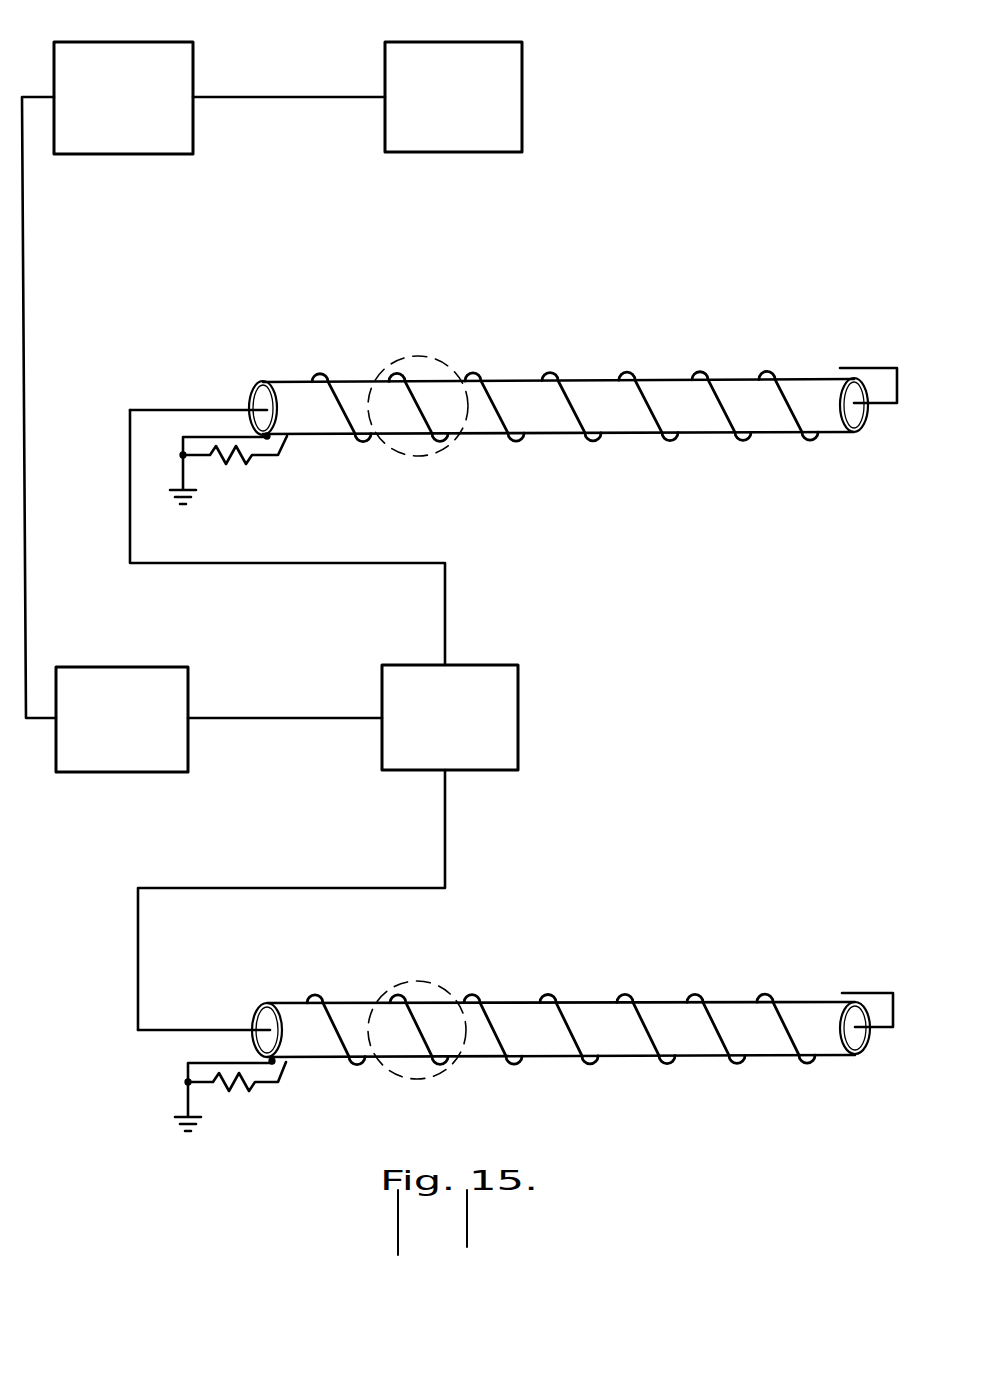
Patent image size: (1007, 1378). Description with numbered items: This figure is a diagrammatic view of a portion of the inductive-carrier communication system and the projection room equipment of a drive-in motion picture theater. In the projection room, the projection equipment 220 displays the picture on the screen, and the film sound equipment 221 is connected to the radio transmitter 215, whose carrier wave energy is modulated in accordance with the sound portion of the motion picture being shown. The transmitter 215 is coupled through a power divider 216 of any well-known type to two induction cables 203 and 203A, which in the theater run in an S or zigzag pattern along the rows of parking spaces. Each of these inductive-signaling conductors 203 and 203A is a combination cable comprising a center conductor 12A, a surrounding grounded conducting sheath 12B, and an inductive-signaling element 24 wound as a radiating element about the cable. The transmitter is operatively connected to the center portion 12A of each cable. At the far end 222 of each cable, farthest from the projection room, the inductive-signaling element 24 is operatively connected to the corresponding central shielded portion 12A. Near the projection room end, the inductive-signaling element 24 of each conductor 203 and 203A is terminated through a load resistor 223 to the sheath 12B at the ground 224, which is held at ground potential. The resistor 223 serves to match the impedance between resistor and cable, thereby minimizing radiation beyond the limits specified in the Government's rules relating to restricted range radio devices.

The center conductor 12A is at (250, 408).
The coaxial cable / tubular outer conductor 12B is at (262, 382).
The inductive-signaling element 24 is at (325, 372).
The induction cable 203 is at (440, 362).
The induction cable 203A is at (436, 982).
The radio transmitter 215 is at (178, 665).
The power divider 216 is at (510, 667).
The projection equipment 220 is at (493, 152).
The film sound equipment 221 is at (163, 154).
The far end 222 is at (868, 368).
The load resistor 223 is at (243, 460).
The ground 224 is at (196, 502).